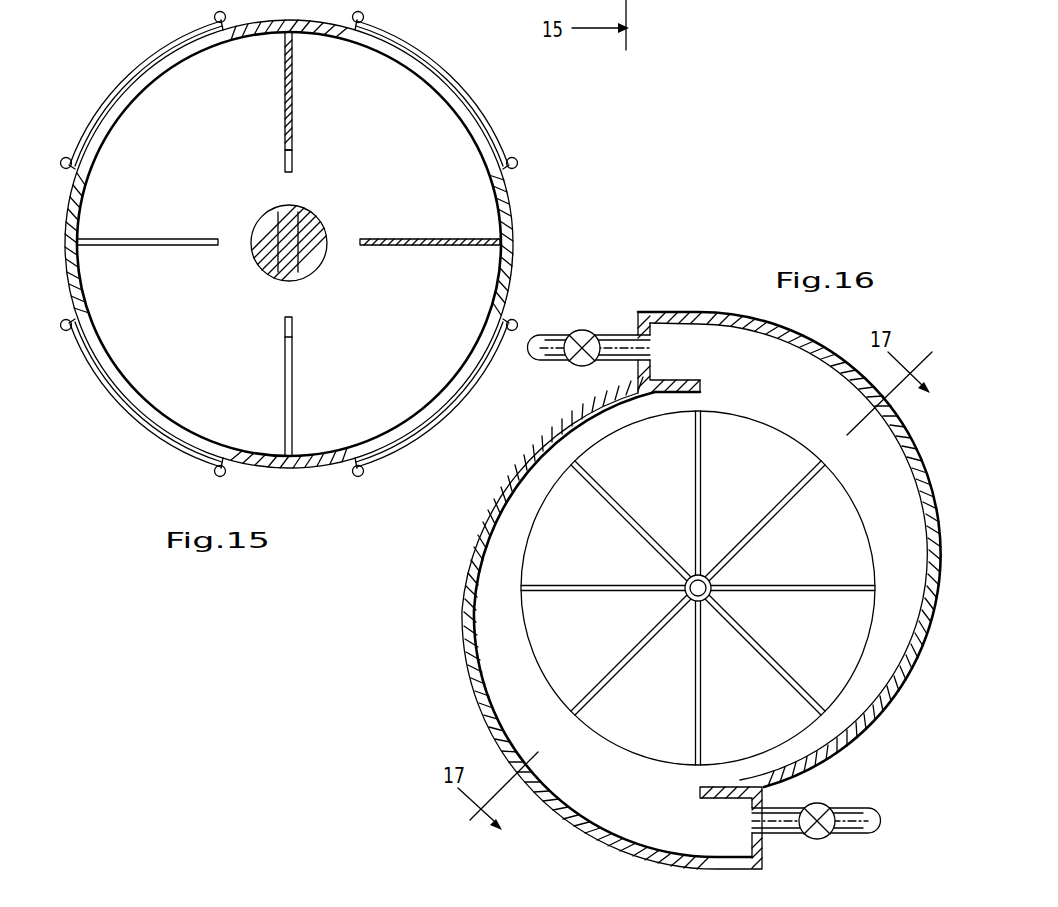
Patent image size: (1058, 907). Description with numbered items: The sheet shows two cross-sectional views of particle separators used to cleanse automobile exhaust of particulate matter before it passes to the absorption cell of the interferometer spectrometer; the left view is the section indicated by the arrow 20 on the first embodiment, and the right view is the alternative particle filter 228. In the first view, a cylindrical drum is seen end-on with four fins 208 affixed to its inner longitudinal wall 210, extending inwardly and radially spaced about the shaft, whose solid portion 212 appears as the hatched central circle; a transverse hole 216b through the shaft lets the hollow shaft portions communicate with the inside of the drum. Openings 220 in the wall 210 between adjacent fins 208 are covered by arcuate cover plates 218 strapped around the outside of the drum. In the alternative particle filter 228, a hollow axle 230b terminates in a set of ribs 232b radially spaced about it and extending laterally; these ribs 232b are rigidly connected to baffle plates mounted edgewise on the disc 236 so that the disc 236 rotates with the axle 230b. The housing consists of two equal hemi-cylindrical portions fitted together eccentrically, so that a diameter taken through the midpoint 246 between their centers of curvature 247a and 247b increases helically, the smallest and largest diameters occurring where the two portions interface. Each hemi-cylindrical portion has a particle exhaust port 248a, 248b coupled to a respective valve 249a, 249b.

In FIG. 15, the apparatus 20 is at (548, 198).
In FIG. 15, the fins 208 is at (173, 238).
In FIG. 15, the inner longitudinal wall 210 is at (303, 452).
In FIG. 15, the solid portion 212 is at (316, 231).
In FIG. 15, the hole 216b is at (302, 210).
In FIG. 15, the cover plates 218 is at (116, 86).
In FIG. 15, the openings 220 is at (105, 140).
In FIG. 16, the particle filter 228 is at (452, 722).
In FIG. 16, the hollow axle 230b is at (722, 580).
In FIG. 16, the ribs 232b is at (803, 480).
In FIG. 16, the disc 236 is at (851, 558).
In FIG. 16, the midpoint 246 is at (690, 592).
In FIG. 16, the center of curvature 247a is at (460, 606).
In FIG. 16, the center of curvature 247b is at (913, 460).
In FIG. 16, the particle exhaust port 248a is at (748, 823).
In FIG. 16, the particle exhaust port 248b is at (650, 348).
In FIG. 16, the valve 249a is at (820, 806).
In FIG. 16, the valve 249b is at (583, 330).